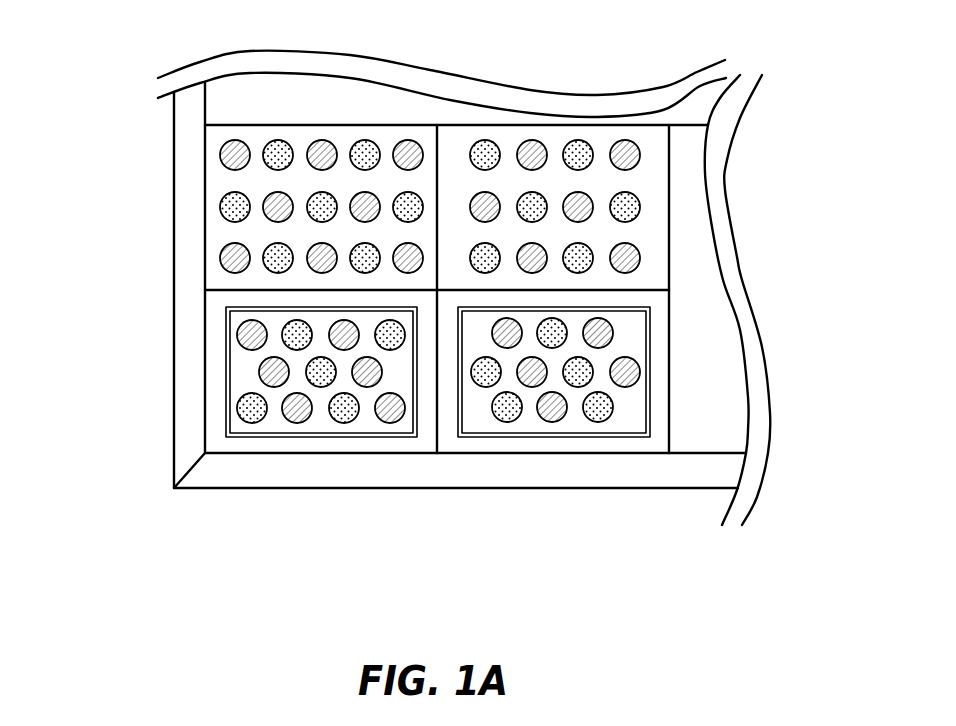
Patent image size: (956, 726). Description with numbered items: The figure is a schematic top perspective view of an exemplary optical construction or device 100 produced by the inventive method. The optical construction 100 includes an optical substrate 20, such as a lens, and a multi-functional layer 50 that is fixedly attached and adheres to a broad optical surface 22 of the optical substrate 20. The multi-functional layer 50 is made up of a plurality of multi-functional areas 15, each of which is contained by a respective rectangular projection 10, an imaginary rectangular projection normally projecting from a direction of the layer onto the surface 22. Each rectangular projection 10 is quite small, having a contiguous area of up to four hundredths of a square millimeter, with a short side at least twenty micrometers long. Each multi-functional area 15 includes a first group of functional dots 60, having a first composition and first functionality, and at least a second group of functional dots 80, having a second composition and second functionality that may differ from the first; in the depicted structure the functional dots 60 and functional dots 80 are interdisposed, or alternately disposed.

The optical construction 100 is at (722, 562).
The multi-functional layer 50 is at (193, 303).
The optical substrate 20 is at (226, 475).
The rectangular projection 10 is at (257, 443).
The optical surface 22 is at (352, 442).
The multi-functional area 15 is at (405, 427).
The functional dots 60 is at (322, 140).
The functional dots 80 is at (372, 140).